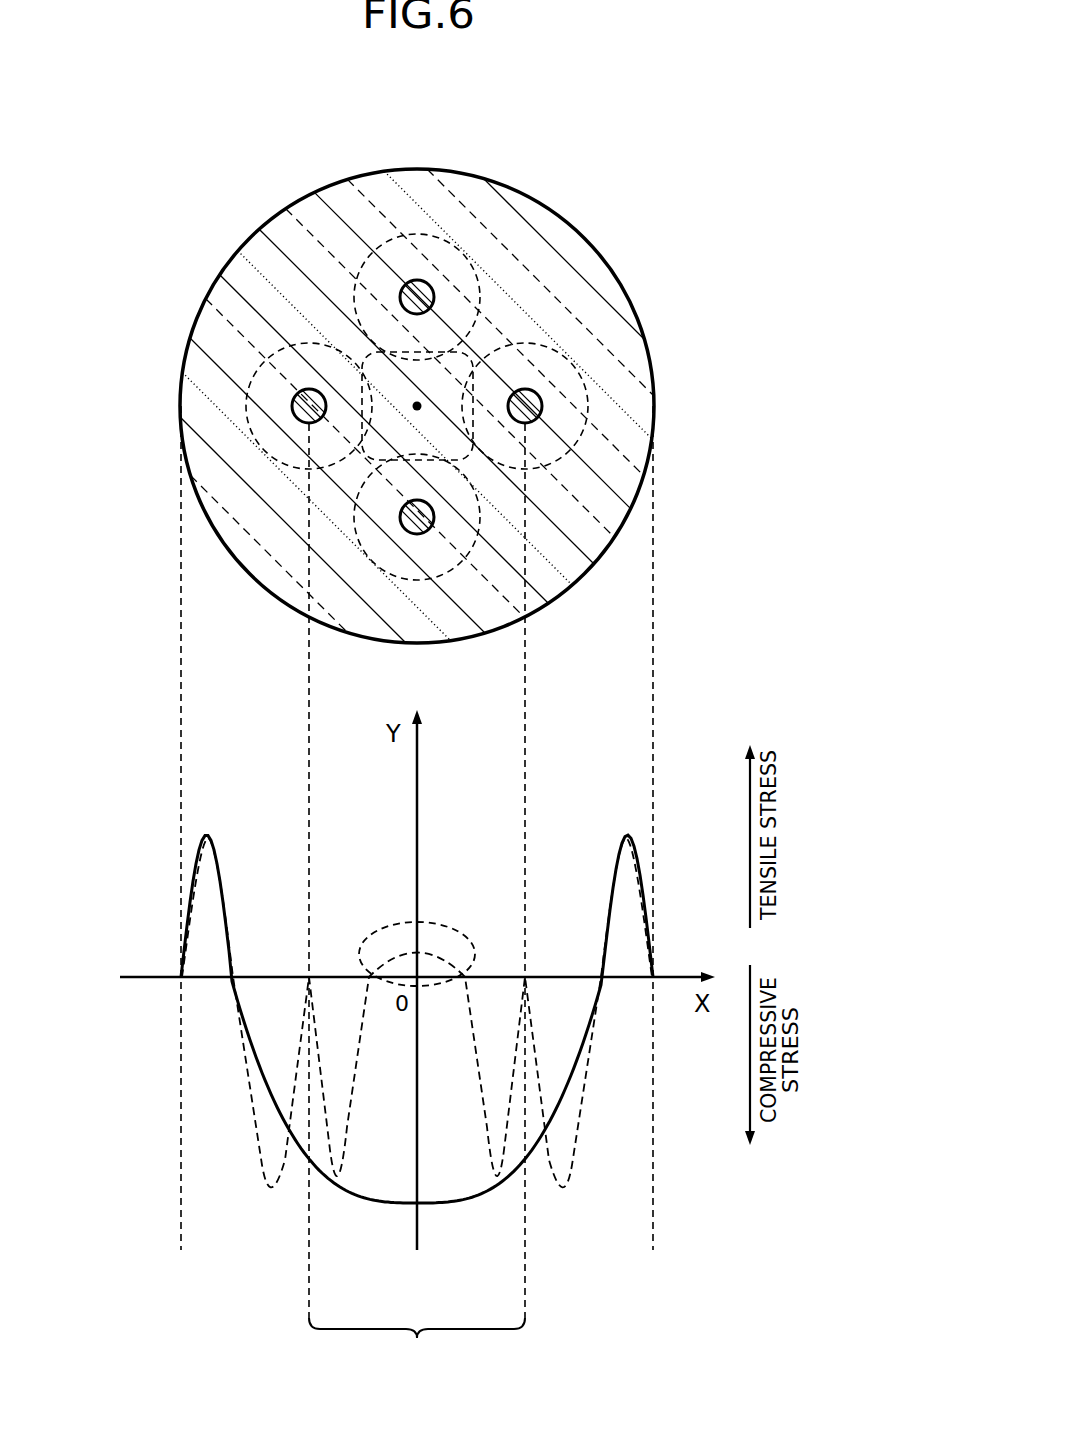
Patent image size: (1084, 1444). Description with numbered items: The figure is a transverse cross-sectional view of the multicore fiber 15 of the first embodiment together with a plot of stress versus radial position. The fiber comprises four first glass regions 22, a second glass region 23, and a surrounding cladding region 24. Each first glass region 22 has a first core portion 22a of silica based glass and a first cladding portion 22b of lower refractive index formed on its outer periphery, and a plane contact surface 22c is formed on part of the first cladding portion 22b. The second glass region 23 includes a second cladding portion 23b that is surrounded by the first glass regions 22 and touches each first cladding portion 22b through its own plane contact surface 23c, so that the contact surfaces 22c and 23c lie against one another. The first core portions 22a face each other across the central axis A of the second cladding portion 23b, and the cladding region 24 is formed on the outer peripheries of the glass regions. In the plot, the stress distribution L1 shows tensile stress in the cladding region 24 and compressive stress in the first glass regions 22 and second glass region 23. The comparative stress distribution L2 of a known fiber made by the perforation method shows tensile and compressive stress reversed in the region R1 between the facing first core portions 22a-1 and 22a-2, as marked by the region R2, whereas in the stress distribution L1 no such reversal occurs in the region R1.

The multicore fiber 15 is at (570, 143).
The cladding region 24 is at (450, 170).
The second glass region 23 is at (762, 265).
The second cladding portion 23b is at (495, 342).
The contact surface 23c is at (488, 378).
The first glass regions 22 is at (802, 380).
The first core portion 22a is at (544, 403).
The first core portion 22a-1 is at (292, 396).
The first core portion 22a-2 is at (656, 417).
The first cladding portion 22b is at (478, 444).
The contact surface 22c is at (545, 455).
The central axis A is at (417, 406).
The stress distribution L1 is at (557, 1120).
The stress distribution L2 is at (262, 1165).
The region R1 is at (417, 1344).
The region R2 is at (455, 928).